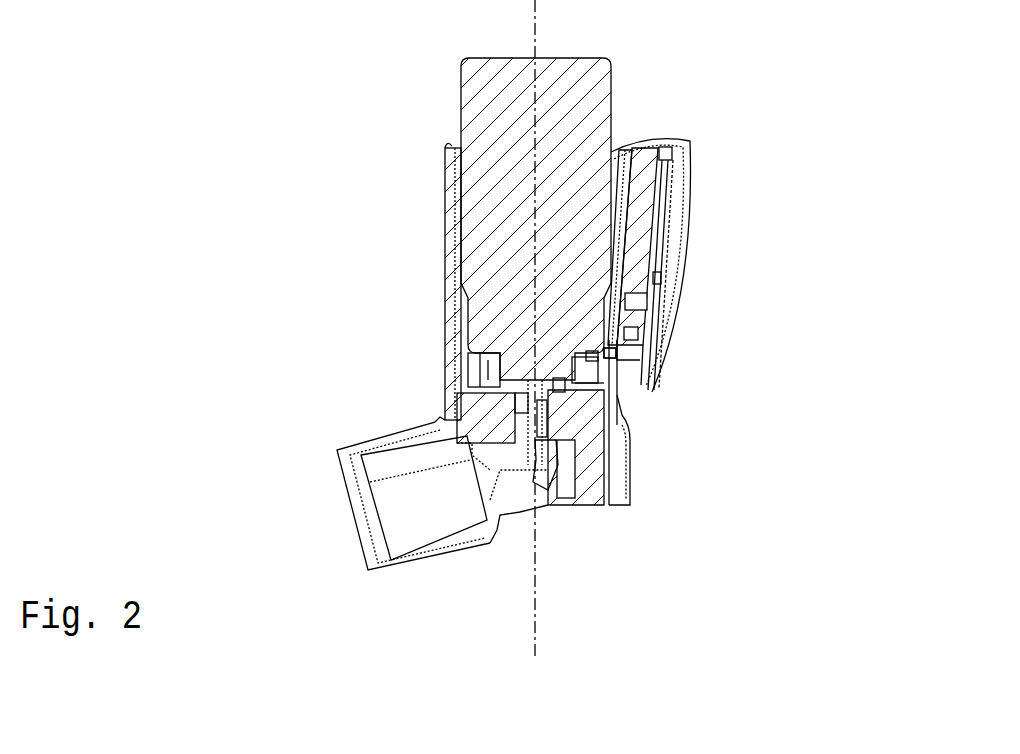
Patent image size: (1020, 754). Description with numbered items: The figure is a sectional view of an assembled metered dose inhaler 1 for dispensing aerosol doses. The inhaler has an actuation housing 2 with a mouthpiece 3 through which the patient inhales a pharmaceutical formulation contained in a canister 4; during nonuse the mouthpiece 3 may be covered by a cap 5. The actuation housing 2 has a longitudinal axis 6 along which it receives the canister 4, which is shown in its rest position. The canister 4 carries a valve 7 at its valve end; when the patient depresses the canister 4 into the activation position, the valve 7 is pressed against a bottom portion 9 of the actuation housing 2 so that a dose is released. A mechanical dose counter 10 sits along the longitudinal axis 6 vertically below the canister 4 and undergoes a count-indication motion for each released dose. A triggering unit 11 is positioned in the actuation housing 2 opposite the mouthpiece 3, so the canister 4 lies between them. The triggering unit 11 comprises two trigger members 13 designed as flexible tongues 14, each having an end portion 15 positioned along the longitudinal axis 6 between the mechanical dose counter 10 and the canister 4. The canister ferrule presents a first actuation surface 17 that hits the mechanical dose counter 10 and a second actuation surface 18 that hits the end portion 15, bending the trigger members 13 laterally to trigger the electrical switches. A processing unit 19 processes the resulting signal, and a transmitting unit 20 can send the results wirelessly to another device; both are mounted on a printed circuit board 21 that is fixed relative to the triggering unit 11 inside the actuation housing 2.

The metered dose inhaler 1 is at (672, 102).
The actuation housing 2 is at (448, 310).
The mouthpiece 3 is at (403, 500).
The canister 4 is at (470, 107).
The cap 5 is at (357, 508).
The longitudinal axis 6 is at (535, 48).
The valve 7 is at (523, 412).
The bottom portion 9 is at (548, 455).
The mechanical dose counter 10 is at (463, 403).
The triggering unit 11 is at (617, 203).
The trigger members 13 is at (612, 354).
The flexible tongues 14 is at (610, 353).
The end portion 15 is at (641, 427).
The first actuation surface 17 is at (560, 382).
The second actuation surface 18 is at (594, 358).
The processing unit 19 is at (667, 215).
The transmitting unit 20 is at (658, 282).
The printed circuit board 21 is at (662, 249).